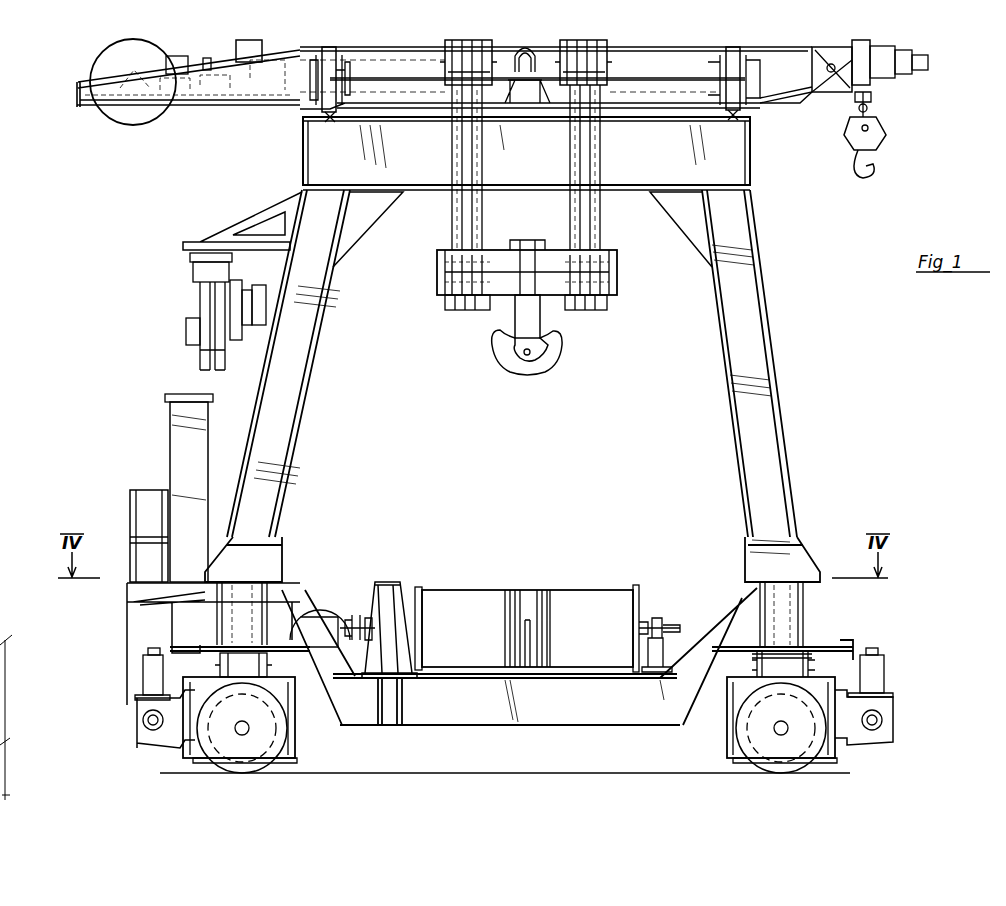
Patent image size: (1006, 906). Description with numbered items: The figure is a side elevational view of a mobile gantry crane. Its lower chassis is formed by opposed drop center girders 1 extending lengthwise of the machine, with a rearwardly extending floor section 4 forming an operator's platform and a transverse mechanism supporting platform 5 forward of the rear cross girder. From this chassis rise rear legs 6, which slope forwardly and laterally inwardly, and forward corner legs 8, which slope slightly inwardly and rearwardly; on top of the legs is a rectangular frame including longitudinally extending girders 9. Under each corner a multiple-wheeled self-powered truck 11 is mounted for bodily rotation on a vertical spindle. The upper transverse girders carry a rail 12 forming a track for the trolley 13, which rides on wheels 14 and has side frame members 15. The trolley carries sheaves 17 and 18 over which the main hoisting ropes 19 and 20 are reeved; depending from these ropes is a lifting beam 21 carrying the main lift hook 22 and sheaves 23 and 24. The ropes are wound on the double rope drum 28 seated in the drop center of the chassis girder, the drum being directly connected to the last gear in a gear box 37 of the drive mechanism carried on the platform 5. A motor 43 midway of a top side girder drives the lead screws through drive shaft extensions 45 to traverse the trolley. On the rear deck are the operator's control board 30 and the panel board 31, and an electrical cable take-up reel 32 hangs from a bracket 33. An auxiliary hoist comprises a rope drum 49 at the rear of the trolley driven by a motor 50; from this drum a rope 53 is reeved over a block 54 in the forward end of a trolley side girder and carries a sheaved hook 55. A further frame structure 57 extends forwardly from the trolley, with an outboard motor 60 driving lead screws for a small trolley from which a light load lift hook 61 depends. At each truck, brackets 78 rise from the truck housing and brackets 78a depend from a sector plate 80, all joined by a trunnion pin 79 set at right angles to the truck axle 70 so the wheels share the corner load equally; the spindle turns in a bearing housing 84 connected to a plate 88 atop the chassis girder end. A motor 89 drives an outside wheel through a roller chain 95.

The drop center girder 1 is at (628, 715).
The floor section 4 is at (150, 592).
The mechanism supporting platform 5 is at (275, 672).
The rear leg 6 is at (285, 435).
The forward corner leg 8 is at (770, 425).
The longitudinally extending girder 9 is at (636, 165).
The multiple-wheeled self-powered truck 11 is at (175, 755).
The rail 12 is at (332, 118).
The trolley 13 is at (650, 44).
The wheel 14 is at (332, 55).
The side frame member 15 is at (412, 58).
The sheave 17 is at (470, 42).
The sheave 18 is at (612, 40).
The main hoisting rope 19 is at (482, 216).
The main hoisting rope 20 is at (570, 204).
The lifting beam 21 is at (553, 290).
The main lift hook 22 is at (510, 362).
The sheave 23 is at (462, 312).
The sheave 24 is at (598, 303).
The double rope drum 28 is at (572, 605).
The operator's control board 30 is at (140, 495).
The panel board 31 is at (180, 430).
The electrical cable take-up reel 32 is at (210, 302).
The bracket 33 is at (252, 215).
The gear box 37 is at (390, 580).
The motor 43 is at (524, 55).
The drive shaft extension 45 is at (628, 78).
The rope drum 49 is at (100, 62).
The motor 50 is at (255, 40).
The rope 53 is at (812, 95).
The block 54 is at (830, 47).
The sheaved hook 55 is at (860, 140).
The frame structure 57 is at (875, 45).
The outboard motor 60 is at (928, 58).
The lift hook 61 is at (874, 98).
The truck axle 70 is at (779, 735).
The bracket 78 is at (813, 672).
The bracket 78a is at (767, 652).
The trunnion pin 79 is at (785, 668).
The sector plate 80 is at (807, 668).
The bearing housing 84 is at (757, 596).
The plate 88 is at (805, 578).
The motor 89 is at (884, 668).
The roller chain 95 is at (893, 728).